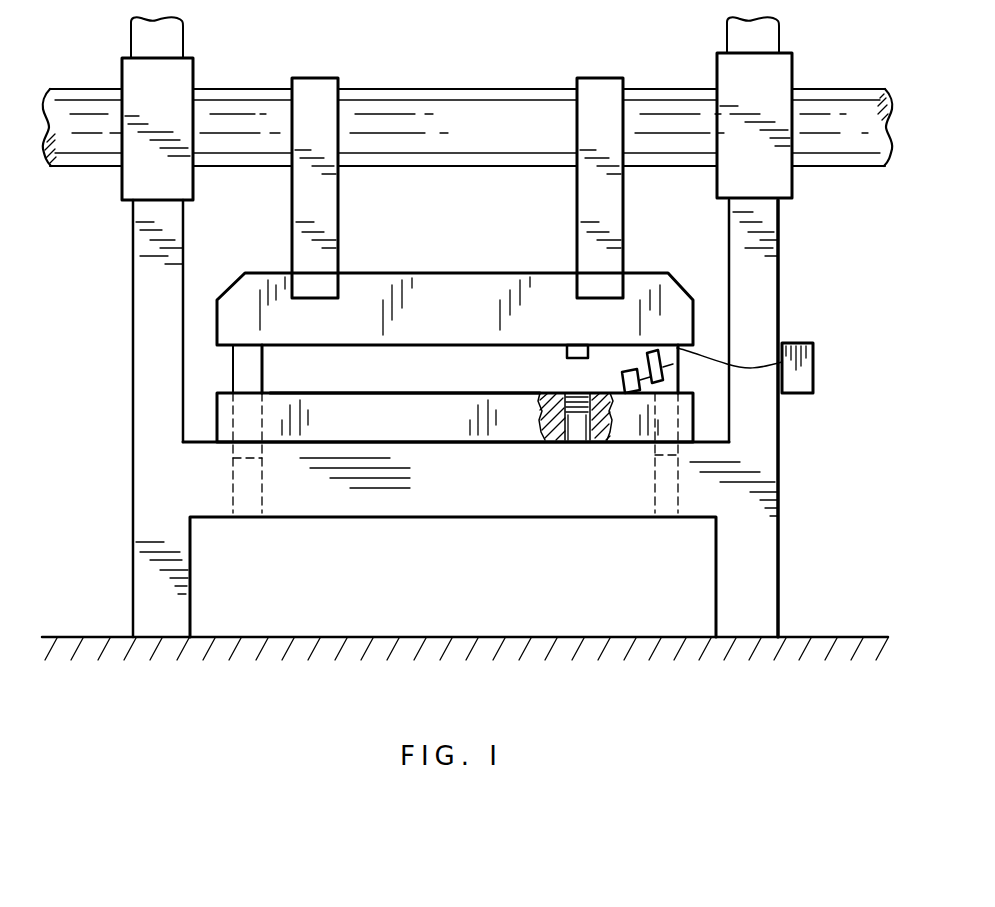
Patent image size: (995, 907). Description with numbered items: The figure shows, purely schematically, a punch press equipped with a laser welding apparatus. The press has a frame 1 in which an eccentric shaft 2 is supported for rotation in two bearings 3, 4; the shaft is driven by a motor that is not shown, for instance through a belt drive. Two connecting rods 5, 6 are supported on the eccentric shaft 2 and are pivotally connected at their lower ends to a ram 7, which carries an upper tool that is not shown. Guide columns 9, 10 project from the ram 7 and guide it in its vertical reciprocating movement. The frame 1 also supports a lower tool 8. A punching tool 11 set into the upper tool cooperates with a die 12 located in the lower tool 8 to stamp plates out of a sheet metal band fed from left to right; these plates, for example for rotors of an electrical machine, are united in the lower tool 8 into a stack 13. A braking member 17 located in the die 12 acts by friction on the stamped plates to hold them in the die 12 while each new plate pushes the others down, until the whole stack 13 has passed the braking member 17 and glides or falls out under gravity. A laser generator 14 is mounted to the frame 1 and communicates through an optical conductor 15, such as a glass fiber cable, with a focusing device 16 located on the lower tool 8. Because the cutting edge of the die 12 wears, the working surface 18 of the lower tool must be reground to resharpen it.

The frame 1 is at (157, 460).
The eccentric shaft 2 is at (450, 110).
The bearing 3 is at (155, 90).
The bearing 4 is at (775, 87).
The connecting rod 5 is at (332, 216).
The connecting rod 6 is at (595, 216).
The ram 7 is at (475, 288).
The lower tool 8 is at (367, 415).
The guide column 9 is at (244, 377).
The guide column 10 is at (668, 365).
The punching tool 11 is at (565, 351).
The die 12 is at (563, 393).
The stack 13 is at (582, 415).
The laser generator 14 is at (815, 365).
The optical conductor 15 is at (716, 357).
The focusing device 16 is at (665, 388).
The braking member 17 is at (590, 393).
The working surface 18 is at (423, 393).